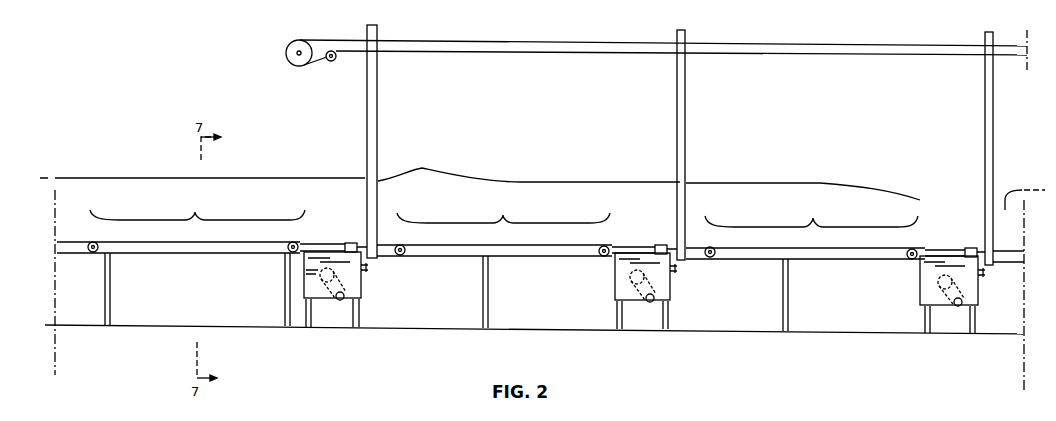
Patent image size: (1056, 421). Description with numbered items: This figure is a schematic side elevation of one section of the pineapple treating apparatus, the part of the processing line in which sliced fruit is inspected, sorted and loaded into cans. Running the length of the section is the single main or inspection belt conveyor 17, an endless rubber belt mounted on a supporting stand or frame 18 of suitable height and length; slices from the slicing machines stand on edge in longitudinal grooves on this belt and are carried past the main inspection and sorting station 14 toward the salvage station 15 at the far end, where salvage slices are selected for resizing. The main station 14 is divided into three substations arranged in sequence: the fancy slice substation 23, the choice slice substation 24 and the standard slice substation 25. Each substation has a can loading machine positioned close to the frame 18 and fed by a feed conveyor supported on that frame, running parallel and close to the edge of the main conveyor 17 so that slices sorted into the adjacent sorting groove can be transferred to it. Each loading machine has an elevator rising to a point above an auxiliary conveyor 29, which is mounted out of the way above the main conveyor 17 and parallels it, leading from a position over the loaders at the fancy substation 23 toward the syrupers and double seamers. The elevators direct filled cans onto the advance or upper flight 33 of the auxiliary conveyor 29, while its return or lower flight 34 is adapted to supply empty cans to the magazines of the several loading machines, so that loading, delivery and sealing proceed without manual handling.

The main inspection and sorting station 14 is at (480, 174).
The salvage station 15 is at (1025, 189).
The main inspection conveyor 17 is at (328, 243).
The supporting frame 18 is at (489, 293).
The fancy slice substation 23 is at (181, 222).
The choice slice substation 24 is at (494, 224).
The standard slice substation 25 is at (805, 227).
The auxiliary conveyor 29 is at (663, 48).
The upper flight 33 is at (527, 41).
The lower flight 34 is at (526, 54).